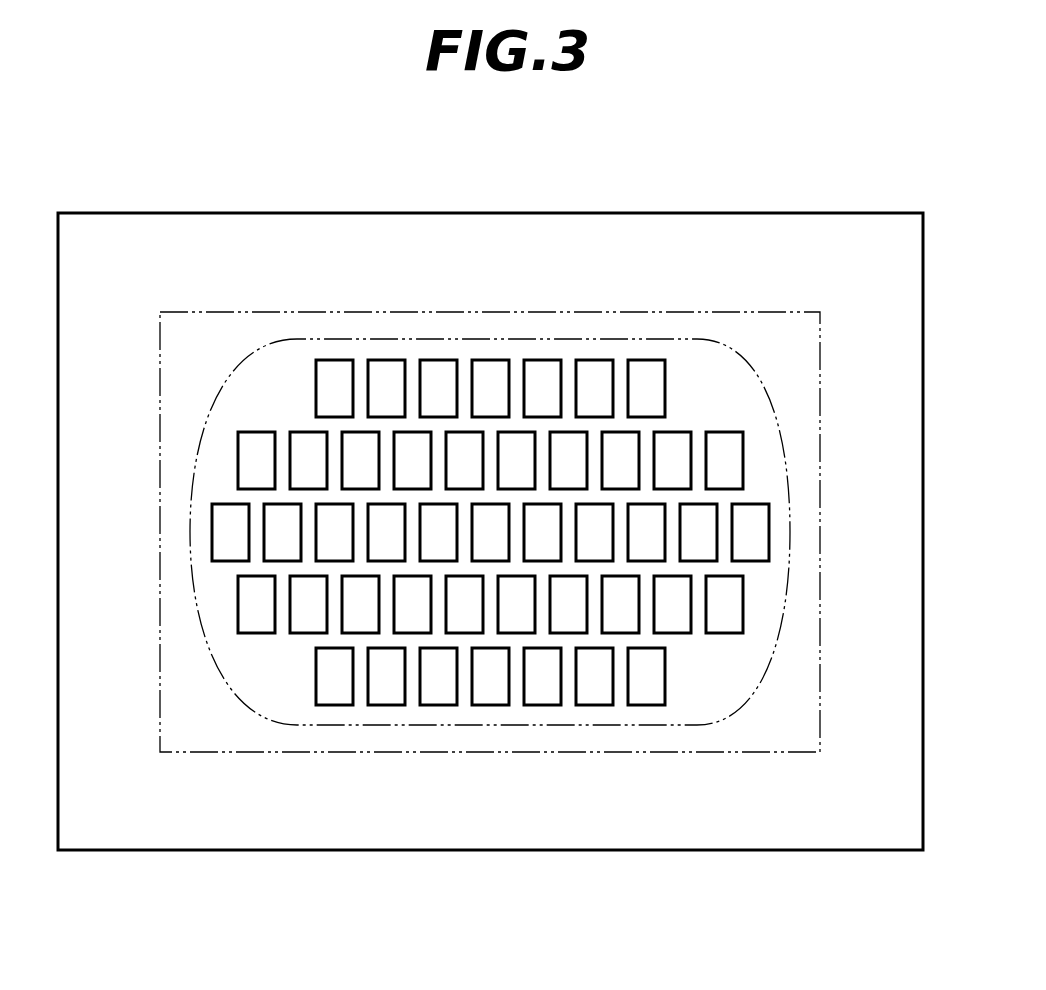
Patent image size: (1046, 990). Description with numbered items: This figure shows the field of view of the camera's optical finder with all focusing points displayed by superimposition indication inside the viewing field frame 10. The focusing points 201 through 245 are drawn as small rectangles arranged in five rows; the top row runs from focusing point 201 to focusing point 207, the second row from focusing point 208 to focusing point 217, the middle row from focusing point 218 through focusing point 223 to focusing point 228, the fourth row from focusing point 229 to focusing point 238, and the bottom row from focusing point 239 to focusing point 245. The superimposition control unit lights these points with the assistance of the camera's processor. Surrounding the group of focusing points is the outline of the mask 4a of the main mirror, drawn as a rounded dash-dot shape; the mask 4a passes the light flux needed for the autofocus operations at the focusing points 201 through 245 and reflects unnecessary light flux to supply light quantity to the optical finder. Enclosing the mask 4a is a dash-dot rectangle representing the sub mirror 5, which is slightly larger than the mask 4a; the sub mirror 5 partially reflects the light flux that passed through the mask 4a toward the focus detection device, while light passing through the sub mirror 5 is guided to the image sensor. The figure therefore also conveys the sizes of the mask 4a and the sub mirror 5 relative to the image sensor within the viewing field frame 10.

The viewing field frame 10 is at (725, 213).
The sub mirror 5 is at (772, 752).
The mask 4a is at (508, 725).
The focusing point 201 is at (332, 360).
The focusing point 207 is at (648, 360).
The focusing point 208 is at (250, 432).
The focusing point 217 is at (730, 433).
The focusing point 218 is at (217, 525).
The focusing point 223 is at (488, 504).
The focusing point 228 is at (765, 528).
The focusing point 229 is at (253, 633).
The focusing point 238 is at (730, 633).
The focusing point 239 is at (325, 705).
The focusing point 245 is at (633, 705).